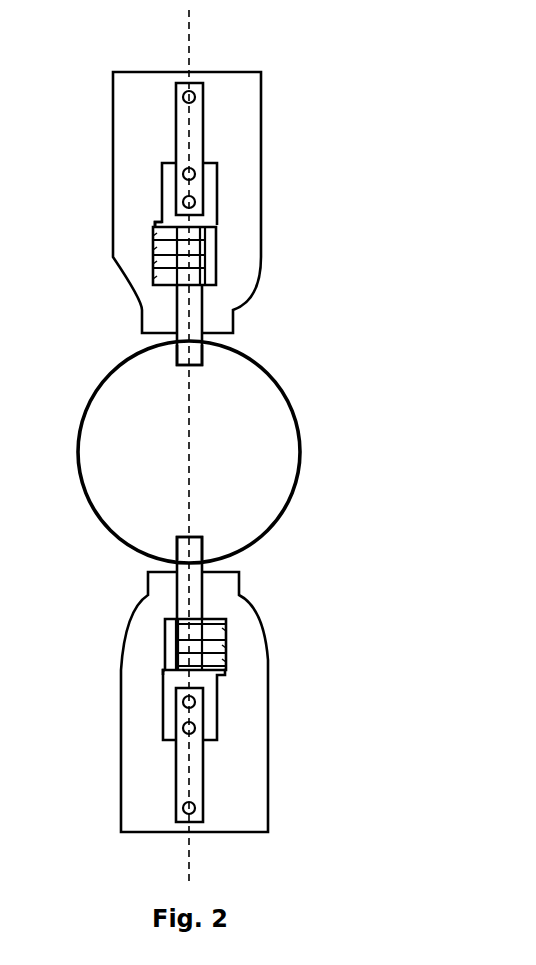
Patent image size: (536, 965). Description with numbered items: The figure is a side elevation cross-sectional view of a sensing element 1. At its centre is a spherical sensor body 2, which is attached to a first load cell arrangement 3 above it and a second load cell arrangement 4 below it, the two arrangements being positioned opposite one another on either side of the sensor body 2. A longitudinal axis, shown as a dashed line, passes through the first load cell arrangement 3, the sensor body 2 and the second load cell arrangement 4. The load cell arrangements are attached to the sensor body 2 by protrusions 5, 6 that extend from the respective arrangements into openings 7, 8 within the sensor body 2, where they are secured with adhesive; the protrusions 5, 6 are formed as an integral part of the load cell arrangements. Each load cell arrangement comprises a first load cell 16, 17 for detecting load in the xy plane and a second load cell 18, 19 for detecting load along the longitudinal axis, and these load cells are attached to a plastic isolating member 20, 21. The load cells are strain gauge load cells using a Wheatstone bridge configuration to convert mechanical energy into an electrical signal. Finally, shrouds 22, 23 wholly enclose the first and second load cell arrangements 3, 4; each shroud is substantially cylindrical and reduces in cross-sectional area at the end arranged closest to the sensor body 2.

The sensing element 1 is at (247, 444).
The sensor body 2 is at (297, 420).
The first load cell arrangement 3 is at (215, 197).
The second load cell arrangement 4 is at (210, 713).
The protrusion 5 is at (188, 350).
The protrusion 6 is at (193, 550).
The opening 7 is at (202, 345).
The opening 8 is at (173, 560).
The first load cell 16 is at (205, 260).
The first load cell 17 is at (225, 622).
The second load cell 18 is at (180, 175).
The second load cell 19 is at (183, 727).
The isolating member 20 is at (158, 227).
The isolating member 21 is at (167, 677).
The shroud 22 is at (263, 108).
The shroud 23 is at (263, 793).